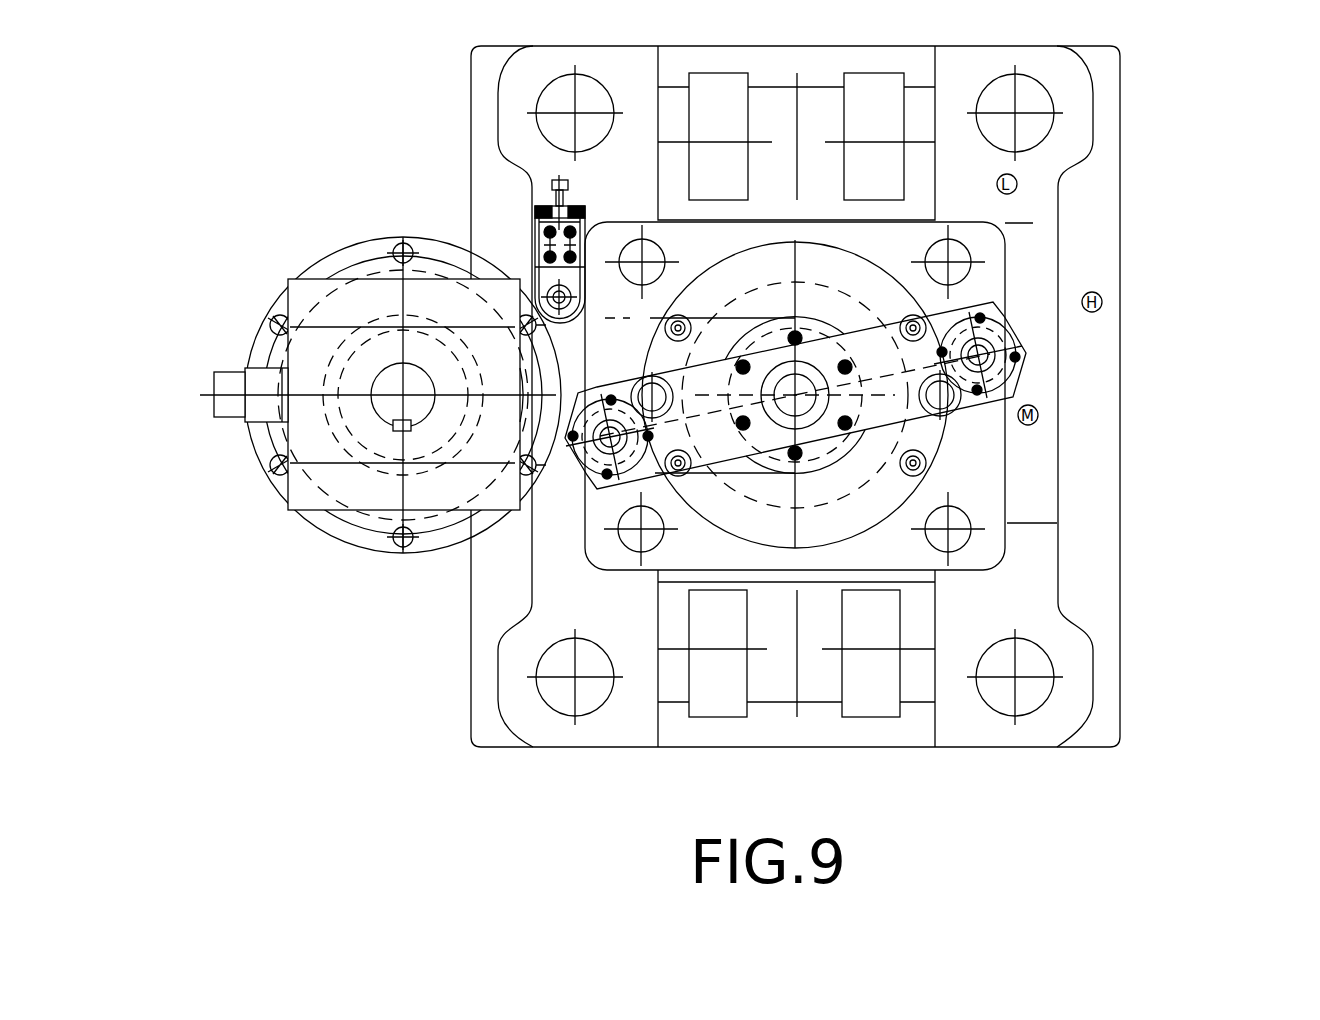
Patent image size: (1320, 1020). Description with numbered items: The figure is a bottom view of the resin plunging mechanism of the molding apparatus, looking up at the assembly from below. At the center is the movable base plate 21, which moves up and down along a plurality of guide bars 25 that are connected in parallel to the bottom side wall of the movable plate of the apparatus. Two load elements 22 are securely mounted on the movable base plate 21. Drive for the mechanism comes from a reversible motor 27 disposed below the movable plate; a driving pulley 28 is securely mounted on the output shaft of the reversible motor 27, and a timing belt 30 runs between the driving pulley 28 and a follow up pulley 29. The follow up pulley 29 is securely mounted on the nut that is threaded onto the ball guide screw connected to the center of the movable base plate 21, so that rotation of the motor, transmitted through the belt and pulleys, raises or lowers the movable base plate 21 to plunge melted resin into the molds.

The movable base plate 21 is at (870, 405).
The load elements 22 is at (958, 408).
The guide bars 25 is at (1025, 333).
The reversible motor 27 is at (377, 540).
The driving pulley 28 is at (365, 443).
The follow up pulley 29 is at (838, 312).
The timing belt 30 is at (525, 335).